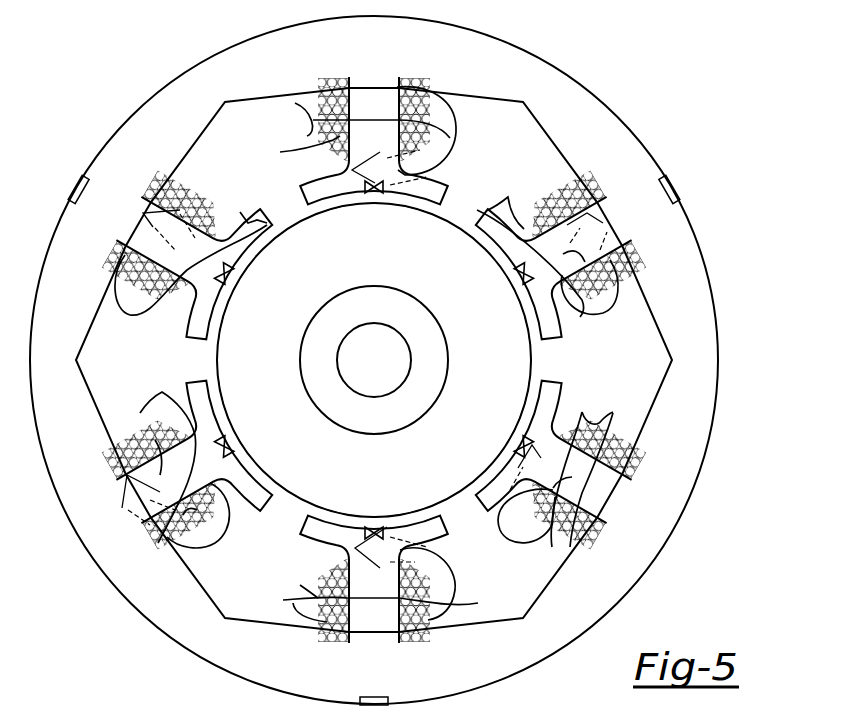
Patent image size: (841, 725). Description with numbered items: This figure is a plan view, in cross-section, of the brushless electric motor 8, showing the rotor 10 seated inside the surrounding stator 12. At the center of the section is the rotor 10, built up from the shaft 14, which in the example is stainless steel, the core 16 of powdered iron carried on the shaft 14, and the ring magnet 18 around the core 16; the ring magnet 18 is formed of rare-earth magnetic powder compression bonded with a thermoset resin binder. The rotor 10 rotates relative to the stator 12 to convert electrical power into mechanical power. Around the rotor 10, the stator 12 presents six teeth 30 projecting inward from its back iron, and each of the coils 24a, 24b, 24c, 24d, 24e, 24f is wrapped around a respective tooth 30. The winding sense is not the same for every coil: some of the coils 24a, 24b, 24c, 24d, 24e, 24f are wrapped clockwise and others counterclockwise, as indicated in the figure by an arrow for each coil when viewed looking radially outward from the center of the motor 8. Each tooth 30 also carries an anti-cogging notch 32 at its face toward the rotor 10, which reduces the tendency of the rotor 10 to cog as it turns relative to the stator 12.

The brushless electric motor 8 is at (693, 92).
The rotor 10 is at (534, 366).
The stator 12 is at (638, 142).
The shaft 14 is at (345, 360).
The core 16 is at (440, 375).
The ring magnet 18 is at (441, 498).
The coil 24a is at (557, 193).
The coil 24b is at (617, 457).
The coil 24c is at (470, 605).
The coil 24d is at (190, 545).
The coil 24e is at (133, 306).
The coil 24f is at (320, 143).
The tooth 30 is at (185, 248).
The anti-cogging notch 32 is at (382, 185).